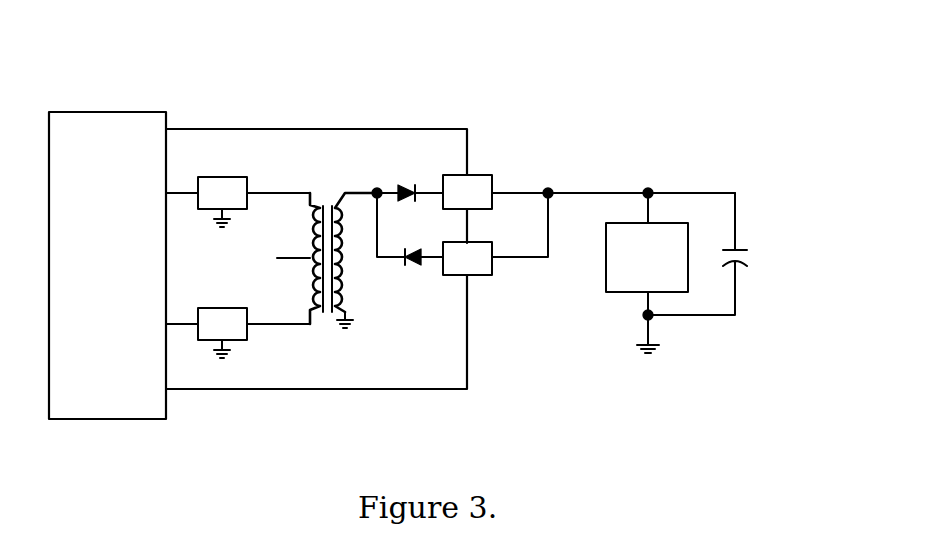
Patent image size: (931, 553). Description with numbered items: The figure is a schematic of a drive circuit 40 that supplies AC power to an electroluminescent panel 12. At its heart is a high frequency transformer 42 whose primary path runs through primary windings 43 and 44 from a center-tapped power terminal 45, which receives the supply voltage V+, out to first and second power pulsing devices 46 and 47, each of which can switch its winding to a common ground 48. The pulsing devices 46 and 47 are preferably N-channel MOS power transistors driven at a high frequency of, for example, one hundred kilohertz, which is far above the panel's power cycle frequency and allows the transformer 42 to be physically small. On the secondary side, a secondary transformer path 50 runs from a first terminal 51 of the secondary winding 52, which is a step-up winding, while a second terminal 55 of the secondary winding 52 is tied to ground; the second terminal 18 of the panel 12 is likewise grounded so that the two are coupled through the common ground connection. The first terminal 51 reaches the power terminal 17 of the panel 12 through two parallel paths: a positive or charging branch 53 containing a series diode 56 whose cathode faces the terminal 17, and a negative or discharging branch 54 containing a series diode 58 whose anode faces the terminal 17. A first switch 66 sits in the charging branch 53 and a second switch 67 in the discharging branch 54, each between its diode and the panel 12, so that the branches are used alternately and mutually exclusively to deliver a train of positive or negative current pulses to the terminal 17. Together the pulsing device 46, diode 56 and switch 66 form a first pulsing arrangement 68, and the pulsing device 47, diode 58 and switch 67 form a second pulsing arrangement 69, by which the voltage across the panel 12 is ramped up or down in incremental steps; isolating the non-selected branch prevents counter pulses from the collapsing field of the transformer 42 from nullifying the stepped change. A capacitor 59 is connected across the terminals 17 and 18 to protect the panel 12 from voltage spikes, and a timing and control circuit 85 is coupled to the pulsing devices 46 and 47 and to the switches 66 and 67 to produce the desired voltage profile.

The timing and control circuit 85 is at (110, 112).
The drive circuit 40 is at (393, 96).
The first power pulsing device 46 is at (225, 177).
The second power pulsing device 47 is at (225, 308).
The common ground 48 is at (213, 220).
The high frequency transformer 42 is at (322, 256).
The primary winding 43 is at (305, 233).
The primary winding 44 is at (305, 282).
The center-tapped power terminal 45 is at (290, 252).
The first terminal of secondary winding 51 is at (345, 200).
The secondary winding 52 is at (350, 265).
The second terminal of secondary winding 55 is at (352, 318).
The secondary transformer path 50 is at (355, 192).
The diode 56 is at (403, 182).
The diode 58 is at (414, 267).
The first switch 66 is at (481, 175).
The second switch 67 is at (478, 277).
The first pulsing arrangement 68 is at (483, 125).
The second pulsing arrangement 69 is at (480, 342).
The charging branch 53 is at (520, 190).
The discharging branch 54 is at (518, 262).
The electroluminescent panel 12 is at (605, 268).
The power terminal 17 is at (647, 210).
The second terminal 18 is at (648, 330).
The capacitor 59 is at (742, 248).